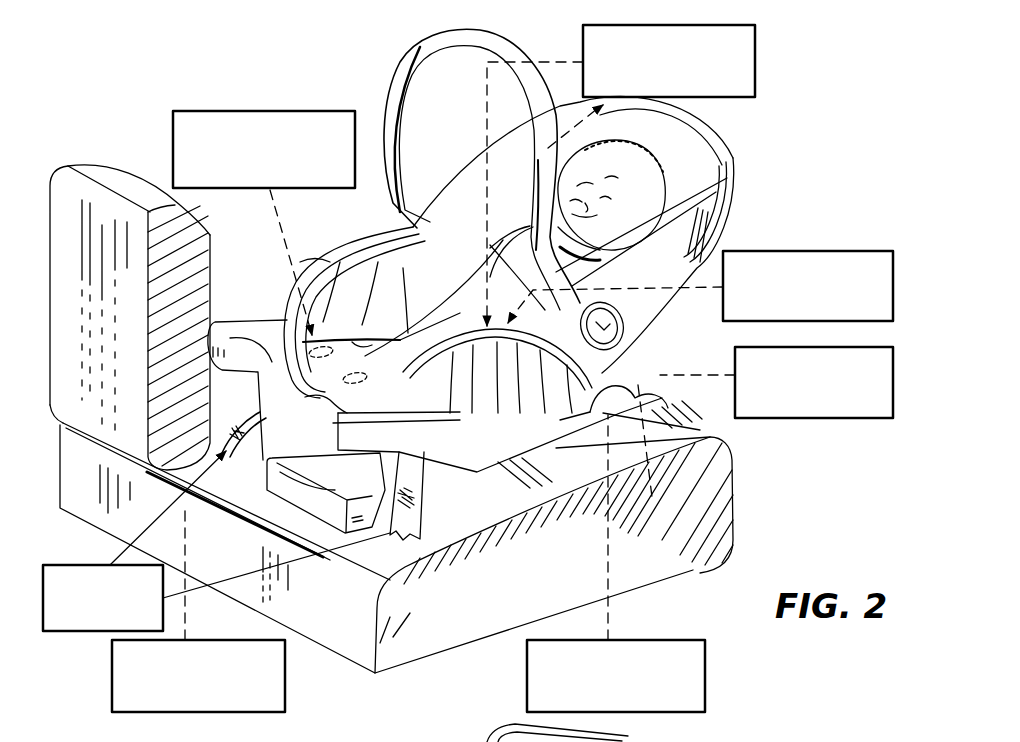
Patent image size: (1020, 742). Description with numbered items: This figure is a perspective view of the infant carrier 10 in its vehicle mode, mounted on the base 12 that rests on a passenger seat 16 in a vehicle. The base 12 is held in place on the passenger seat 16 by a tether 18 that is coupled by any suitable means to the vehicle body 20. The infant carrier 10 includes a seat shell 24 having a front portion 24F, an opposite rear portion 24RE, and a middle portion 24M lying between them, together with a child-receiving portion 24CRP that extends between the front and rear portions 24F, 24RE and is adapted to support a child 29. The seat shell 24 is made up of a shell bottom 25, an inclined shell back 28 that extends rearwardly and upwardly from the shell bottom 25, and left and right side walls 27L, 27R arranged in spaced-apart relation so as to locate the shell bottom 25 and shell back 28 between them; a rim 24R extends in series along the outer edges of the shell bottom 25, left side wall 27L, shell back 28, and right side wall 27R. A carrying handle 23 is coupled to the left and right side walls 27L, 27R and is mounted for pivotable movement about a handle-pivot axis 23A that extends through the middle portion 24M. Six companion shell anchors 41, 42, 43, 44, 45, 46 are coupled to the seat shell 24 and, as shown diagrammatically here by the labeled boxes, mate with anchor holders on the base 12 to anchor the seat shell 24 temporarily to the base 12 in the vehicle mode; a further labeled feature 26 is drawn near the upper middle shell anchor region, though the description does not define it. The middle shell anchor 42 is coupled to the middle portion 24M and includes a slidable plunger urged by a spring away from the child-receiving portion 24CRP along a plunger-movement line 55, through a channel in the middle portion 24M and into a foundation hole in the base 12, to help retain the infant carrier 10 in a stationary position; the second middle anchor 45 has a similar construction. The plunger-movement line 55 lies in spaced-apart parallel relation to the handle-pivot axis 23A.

The infant carrier 10 is at (817, 41).
The base 12 is at (250, 312).
The passenger seat 16 is at (60, 477).
The tether 18 is at (242, 426).
The vehicle body 20 is at (78, 632).
The carrying handle 23 is at (513, 29).
The handle-pivot axis 23A is at (615, 302).
The seat shell 24 is at (749, 171).
The rim 24R is at (472, 167).
The front portion 24F is at (423, 393).
The middle portion 24M is at (604, 370).
The rear portion 24RE is at (638, 380).
The child-receiving portion 24CRP is at (354, 330).
The shell bottom 25 is at (407, 333).
The middle shell anchor connection 26 is at (547, 107).
The left side wall 27L is at (320, 268).
The right side wall 27R is at (547, 473).
The shell back 28 is at (690, 182).
The child 29 is at (672, 149).
The shell anchor 41 is at (205, 712).
The middle shell anchor 42 is at (705, 692).
The shell anchor 43 is at (828, 418).
The shell anchor 44 is at (224, 110).
The second middle anchor 45 is at (705, 97).
The shell anchor 46 is at (790, 252).
The plunger-movement line 55 is at (648, 456).